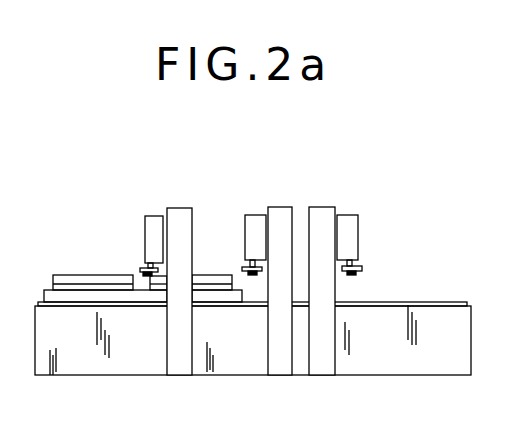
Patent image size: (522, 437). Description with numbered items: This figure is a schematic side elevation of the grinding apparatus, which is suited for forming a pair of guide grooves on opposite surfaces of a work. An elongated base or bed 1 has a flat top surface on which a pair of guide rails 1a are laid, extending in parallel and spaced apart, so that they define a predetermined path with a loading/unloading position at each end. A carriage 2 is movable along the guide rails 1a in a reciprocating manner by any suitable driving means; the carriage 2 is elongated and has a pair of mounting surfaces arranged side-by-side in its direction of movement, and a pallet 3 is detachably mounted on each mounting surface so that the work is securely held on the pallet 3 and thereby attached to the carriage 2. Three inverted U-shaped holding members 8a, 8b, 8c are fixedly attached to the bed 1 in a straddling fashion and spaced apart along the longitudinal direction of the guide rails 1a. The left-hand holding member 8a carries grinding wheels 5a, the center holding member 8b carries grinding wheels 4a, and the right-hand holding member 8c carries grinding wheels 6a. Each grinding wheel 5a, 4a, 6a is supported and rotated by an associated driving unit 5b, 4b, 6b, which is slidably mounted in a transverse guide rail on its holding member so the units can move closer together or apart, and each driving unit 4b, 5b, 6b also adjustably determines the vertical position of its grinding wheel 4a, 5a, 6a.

The base or bed 1 is at (401, 320).
The guide rail 1a is at (428, 300).
The carriage 2 is at (100, 288).
The pallet 3 is at (67, 278).
The grinding wheel 4a is at (242, 265).
The driving unit 4b is at (260, 222).
The grinding wheel 5a is at (145, 267).
The driving unit 5b is at (158, 222).
The grinding wheel 6a is at (360, 267).
The driving unit 6b is at (348, 222).
The U-shaped holding member 8a is at (180, 218).
The U-shaped holding member 8b is at (278, 218).
The U-shaped holding member 8c is at (320, 213).